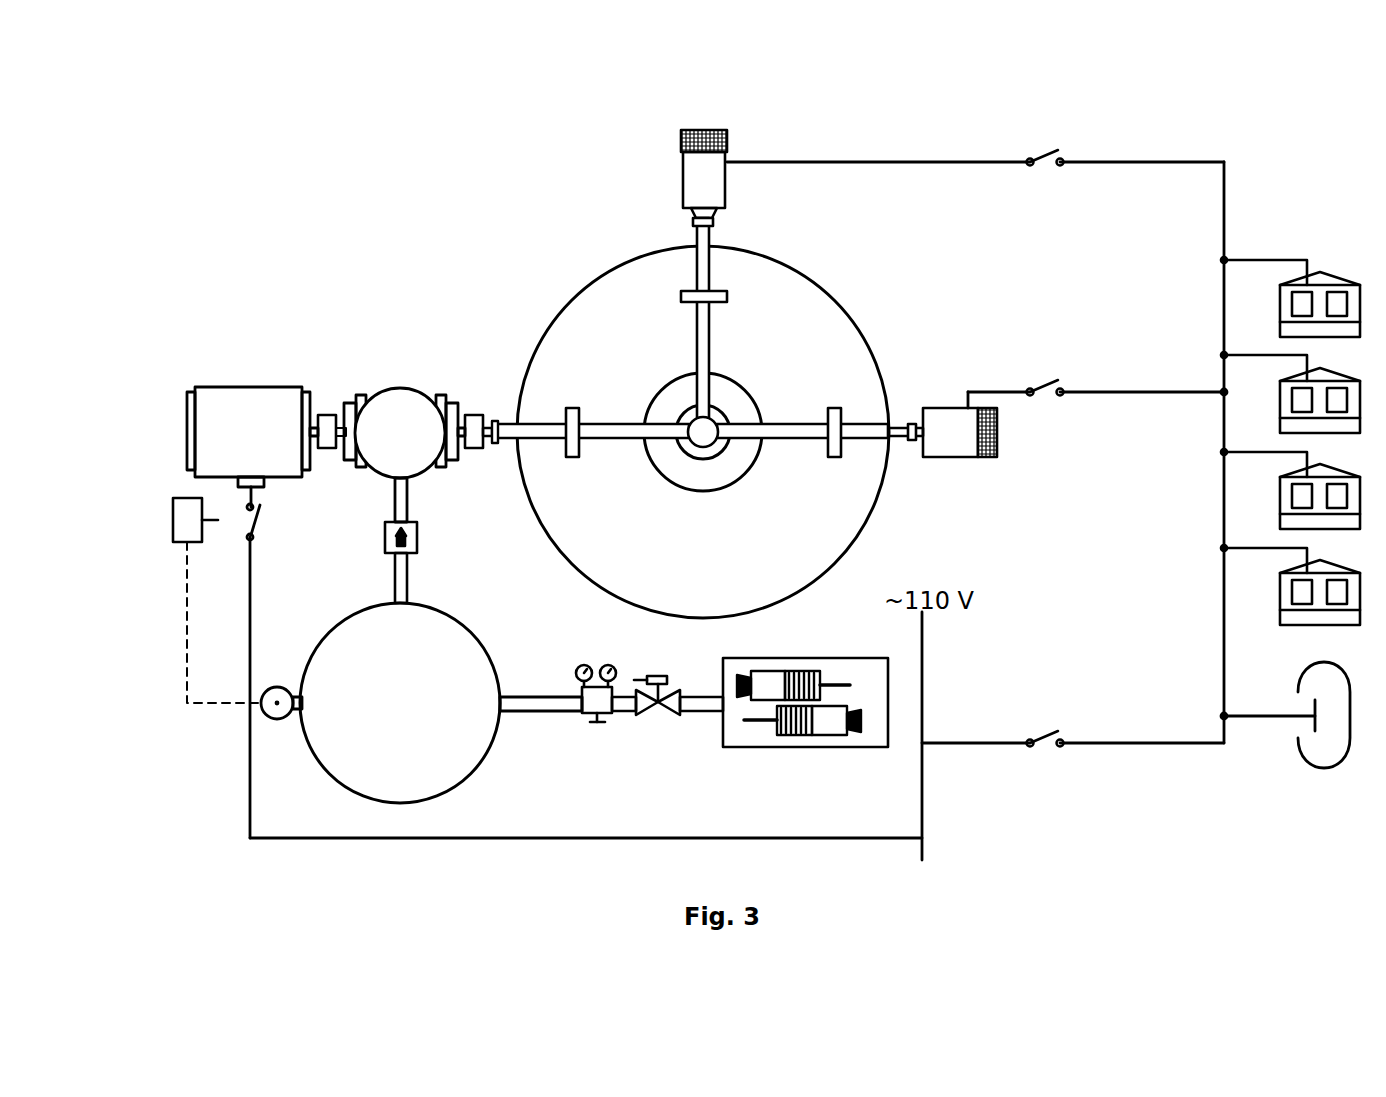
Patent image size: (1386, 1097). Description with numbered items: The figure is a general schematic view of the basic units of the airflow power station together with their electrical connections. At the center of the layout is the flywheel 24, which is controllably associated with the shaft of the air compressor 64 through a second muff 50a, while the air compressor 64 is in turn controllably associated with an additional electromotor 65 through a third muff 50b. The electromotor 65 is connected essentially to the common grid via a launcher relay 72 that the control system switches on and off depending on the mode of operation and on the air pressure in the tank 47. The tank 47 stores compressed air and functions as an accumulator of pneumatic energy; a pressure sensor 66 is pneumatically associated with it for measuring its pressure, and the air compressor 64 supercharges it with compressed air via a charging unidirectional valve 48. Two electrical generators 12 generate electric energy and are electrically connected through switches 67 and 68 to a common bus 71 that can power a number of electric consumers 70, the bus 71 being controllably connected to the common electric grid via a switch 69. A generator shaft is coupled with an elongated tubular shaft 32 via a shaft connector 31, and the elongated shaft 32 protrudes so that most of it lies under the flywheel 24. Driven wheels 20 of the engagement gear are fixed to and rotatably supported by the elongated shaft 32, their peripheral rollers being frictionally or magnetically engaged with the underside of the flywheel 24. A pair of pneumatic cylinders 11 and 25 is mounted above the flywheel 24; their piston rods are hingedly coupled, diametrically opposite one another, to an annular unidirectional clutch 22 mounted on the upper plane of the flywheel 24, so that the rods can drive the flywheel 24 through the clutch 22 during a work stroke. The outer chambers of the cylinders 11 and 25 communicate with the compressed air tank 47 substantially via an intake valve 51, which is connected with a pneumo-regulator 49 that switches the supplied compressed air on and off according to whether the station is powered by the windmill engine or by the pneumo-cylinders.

The pneumatic cylinder 11 is at (770, 683).
The electrical generator 12 is at (718, 170).
The driven wheel 20 is at (683, 293).
The unidirectional clutch 22 is at (675, 467).
The flywheel 24 is at (836, 338).
The pneumatic cylinder 25 is at (830, 713).
The shaft connector 31 is at (487, 423).
The elongated tubular shaft 32 is at (706, 412).
The tank 47 is at (370, 667).
The charging unidirectional valve 48 is at (388, 530).
The pneumo-regulator 49 is at (592, 707).
The second muff 50a is at (477, 418).
The third muff 50b is at (326, 420).
The intake valve 51 is at (640, 712).
The air compressor 64 is at (430, 420).
The electromotor 65 is at (262, 413).
The pressure sensor 66 is at (275, 697).
The switch 67 is at (1045, 143).
The switch 68 is at (1045, 374).
The switch 69 is at (1045, 725).
The electric consumers 70 is at (1306, 592).
The common bus 71 is at (1322, 690).
The launcher relay 72 is at (184, 518).